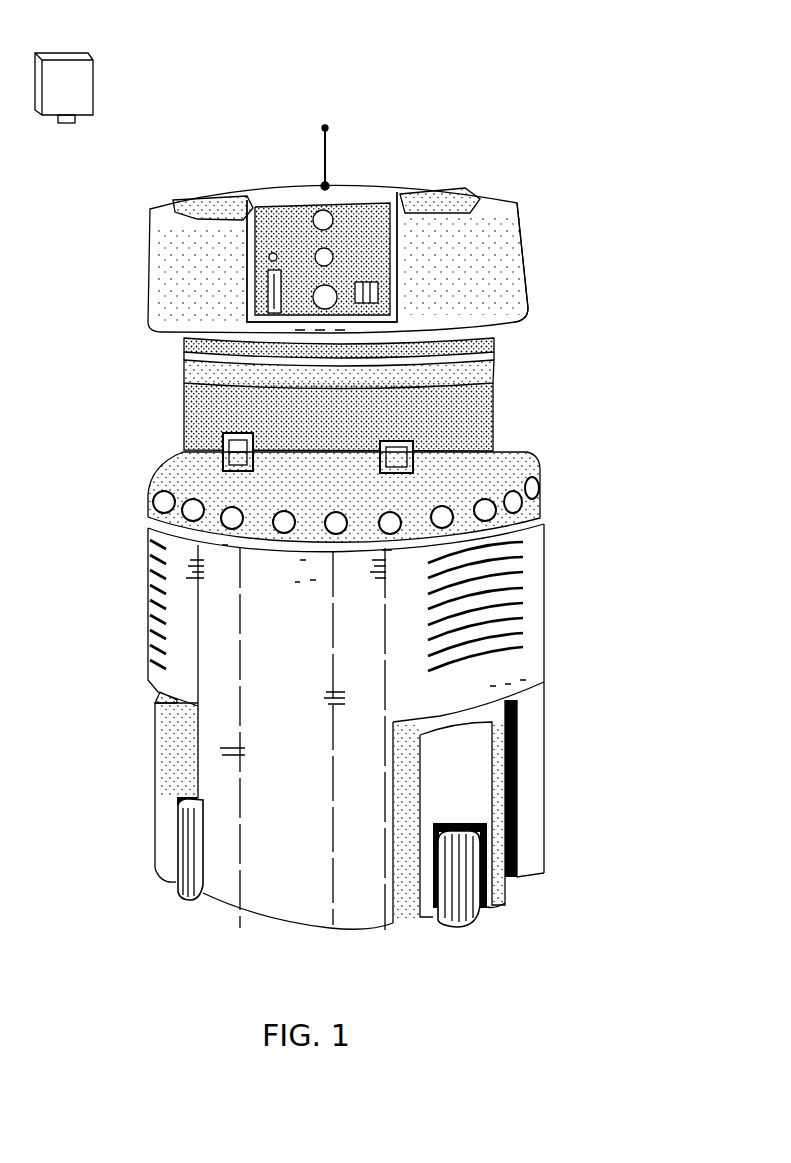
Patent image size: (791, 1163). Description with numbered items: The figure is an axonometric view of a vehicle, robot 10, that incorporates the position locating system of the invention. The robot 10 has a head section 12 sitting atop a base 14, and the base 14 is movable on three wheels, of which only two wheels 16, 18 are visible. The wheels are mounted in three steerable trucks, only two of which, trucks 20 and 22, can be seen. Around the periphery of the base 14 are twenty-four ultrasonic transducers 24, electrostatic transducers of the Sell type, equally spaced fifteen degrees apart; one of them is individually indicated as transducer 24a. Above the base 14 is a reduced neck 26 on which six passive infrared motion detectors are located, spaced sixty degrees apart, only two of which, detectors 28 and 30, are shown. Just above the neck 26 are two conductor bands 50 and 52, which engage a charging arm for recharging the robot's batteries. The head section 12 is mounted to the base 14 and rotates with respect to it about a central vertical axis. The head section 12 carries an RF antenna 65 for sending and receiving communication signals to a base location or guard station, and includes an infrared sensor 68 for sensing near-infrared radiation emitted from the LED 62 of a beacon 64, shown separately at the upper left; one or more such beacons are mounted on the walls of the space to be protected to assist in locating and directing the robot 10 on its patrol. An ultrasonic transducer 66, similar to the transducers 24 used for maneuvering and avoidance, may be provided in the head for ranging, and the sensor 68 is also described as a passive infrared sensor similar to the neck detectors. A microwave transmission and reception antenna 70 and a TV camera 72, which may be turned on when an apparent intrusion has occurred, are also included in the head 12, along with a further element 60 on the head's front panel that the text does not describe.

The robot 10 is at (658, 86).
The head section 12 is at (537, 233).
The base 14 is at (546, 622).
The wheel 16 is at (181, 889).
The wheel 18 is at (465, 919).
The steerable truck 20 is at (158, 774).
The steerable truck 22 is at (478, 792).
The ultrasonic transducers 24 is at (537, 495).
The ultrasonic transducer 24a is at (193, 510).
The reduced neck 26 is at (497, 423).
The passive infrared motion detector 28 is at (195, 442).
The passive infrared motion detector 30 is at (540, 453).
The conductor band 50 is at (493, 370).
The conductor band 52 is at (490, 335).
The lights 60 is at (335, 208).
The LED 62 is at (83, 116).
The beacon 64 is at (70, 58).
The RF antenna 65 is at (330, 148).
The ultrasonic transducer 66 is at (313, 252).
The infrared sensor 68 is at (524, 262).
The microwave transmission and reception antenna 70 is at (265, 297).
The TV camera 72 is at (355, 285).